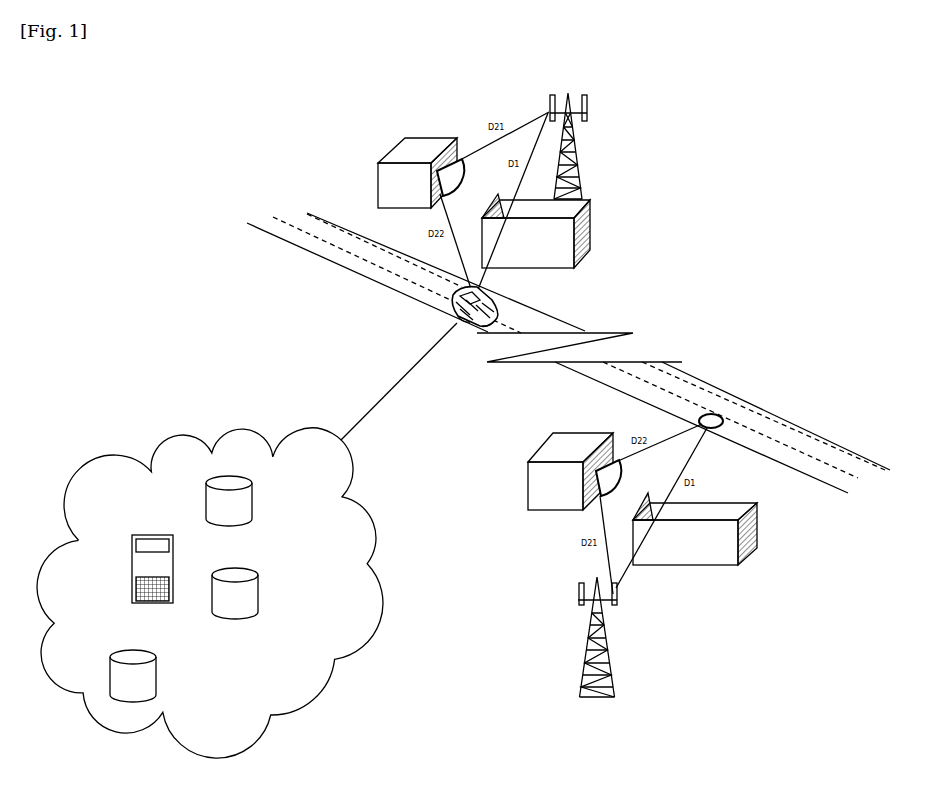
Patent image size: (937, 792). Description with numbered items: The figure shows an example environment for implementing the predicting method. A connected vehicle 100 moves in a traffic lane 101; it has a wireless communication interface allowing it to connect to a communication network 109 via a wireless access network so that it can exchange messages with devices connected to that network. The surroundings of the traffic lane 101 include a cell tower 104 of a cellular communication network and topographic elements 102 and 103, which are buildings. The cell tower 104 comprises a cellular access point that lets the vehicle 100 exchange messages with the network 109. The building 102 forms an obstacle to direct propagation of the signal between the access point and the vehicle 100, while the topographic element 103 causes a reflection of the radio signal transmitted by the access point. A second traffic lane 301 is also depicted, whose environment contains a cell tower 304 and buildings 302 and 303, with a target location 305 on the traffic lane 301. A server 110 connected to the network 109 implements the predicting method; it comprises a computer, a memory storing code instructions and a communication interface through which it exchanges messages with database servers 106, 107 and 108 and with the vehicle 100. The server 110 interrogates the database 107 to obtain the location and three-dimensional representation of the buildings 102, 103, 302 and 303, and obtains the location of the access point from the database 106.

The vehicle 100 is at (457, 323).
The traffic lane 101 is at (332, 250).
The topographic element 102 is at (588, 222).
The topographic element 103 is at (388, 179).
The cell tower 104 is at (568, 90).
The database server 106 is at (252, 497).
The database server 107 is at (258, 582).
The database server 108 is at (156, 665).
The communication network 109 is at (103, 450).
The server 110 is at (132, 580).
The second traffic lane 301 is at (616, 387).
The building 302 is at (758, 528).
The building 303 is at (542, 487).
The cell tower 304 is at (576, 595).
The target location 305 is at (727, 409).